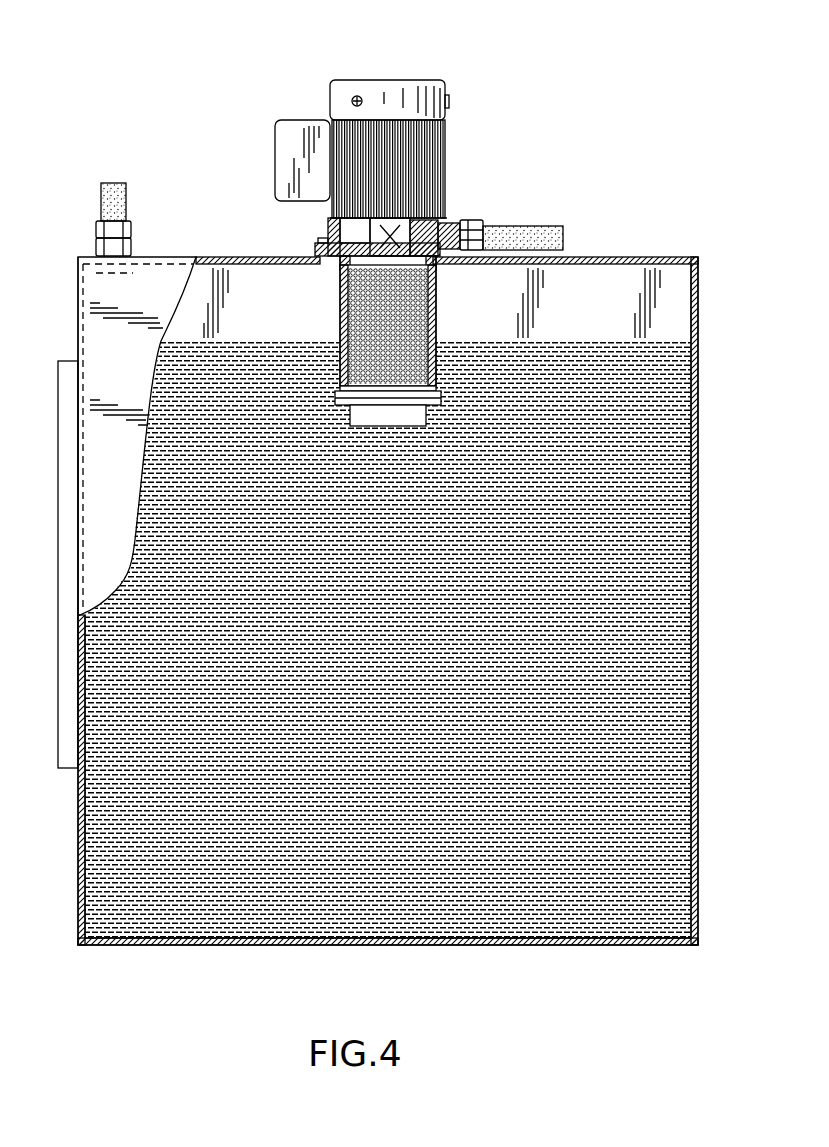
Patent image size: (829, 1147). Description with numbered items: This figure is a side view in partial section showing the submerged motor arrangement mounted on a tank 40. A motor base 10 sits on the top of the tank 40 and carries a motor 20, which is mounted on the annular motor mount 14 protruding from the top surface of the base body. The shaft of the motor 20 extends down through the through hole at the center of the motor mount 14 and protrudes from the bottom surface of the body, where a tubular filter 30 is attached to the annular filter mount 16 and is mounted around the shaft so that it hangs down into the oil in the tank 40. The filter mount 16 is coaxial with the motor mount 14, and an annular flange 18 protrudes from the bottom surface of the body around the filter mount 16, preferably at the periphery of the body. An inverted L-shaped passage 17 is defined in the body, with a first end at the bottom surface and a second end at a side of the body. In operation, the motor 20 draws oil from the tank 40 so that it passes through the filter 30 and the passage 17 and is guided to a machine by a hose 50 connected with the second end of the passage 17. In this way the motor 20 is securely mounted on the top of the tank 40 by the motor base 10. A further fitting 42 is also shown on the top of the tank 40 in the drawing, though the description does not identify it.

The motor base 10 is at (383, 234).
The motor mount 14 is at (320, 216).
The filter mount 16 is at (331, 259).
The passage 17 is at (470, 214).
The flange 18 is at (304, 243).
The motor 20 is at (412, 73).
The tubular filter 30 is at (420, 283).
The tank 40 is at (625, 249).
The vent fitting 42 is at (92, 222).
The hose 50 is at (545, 218).